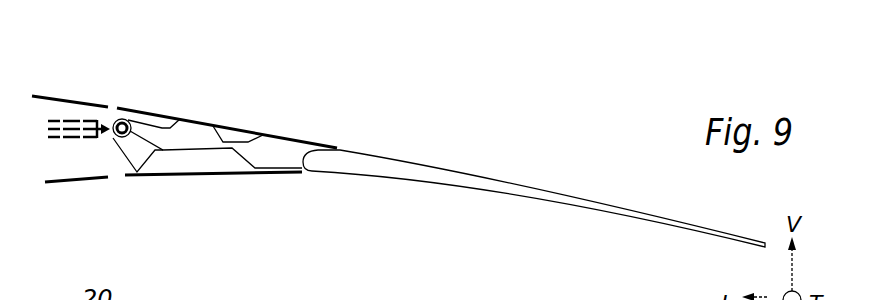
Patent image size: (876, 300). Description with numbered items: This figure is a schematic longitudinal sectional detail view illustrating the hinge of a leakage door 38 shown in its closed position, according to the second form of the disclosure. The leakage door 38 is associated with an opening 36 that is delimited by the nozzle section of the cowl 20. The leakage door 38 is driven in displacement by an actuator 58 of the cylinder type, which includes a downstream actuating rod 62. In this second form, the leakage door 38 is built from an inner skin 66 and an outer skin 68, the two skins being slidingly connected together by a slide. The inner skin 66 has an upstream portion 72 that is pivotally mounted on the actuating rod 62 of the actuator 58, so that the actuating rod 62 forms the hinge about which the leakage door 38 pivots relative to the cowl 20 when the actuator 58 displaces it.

The cowl 20 is at (188, 81).
The opening 36 is at (309, 131).
The leakage door 38 is at (227, 104).
The actuator 58 is at (63, 102).
The actuating rod 62 is at (112, 118).
The inner skin 66 is at (236, 175).
The outer skin 68 is at (238, 125).
The upstream portion 72 is at (133, 143).